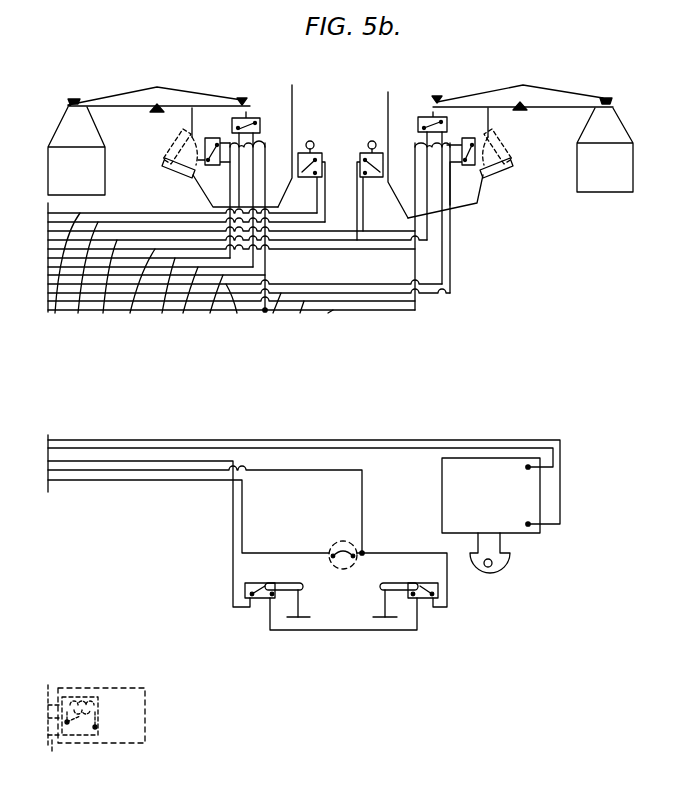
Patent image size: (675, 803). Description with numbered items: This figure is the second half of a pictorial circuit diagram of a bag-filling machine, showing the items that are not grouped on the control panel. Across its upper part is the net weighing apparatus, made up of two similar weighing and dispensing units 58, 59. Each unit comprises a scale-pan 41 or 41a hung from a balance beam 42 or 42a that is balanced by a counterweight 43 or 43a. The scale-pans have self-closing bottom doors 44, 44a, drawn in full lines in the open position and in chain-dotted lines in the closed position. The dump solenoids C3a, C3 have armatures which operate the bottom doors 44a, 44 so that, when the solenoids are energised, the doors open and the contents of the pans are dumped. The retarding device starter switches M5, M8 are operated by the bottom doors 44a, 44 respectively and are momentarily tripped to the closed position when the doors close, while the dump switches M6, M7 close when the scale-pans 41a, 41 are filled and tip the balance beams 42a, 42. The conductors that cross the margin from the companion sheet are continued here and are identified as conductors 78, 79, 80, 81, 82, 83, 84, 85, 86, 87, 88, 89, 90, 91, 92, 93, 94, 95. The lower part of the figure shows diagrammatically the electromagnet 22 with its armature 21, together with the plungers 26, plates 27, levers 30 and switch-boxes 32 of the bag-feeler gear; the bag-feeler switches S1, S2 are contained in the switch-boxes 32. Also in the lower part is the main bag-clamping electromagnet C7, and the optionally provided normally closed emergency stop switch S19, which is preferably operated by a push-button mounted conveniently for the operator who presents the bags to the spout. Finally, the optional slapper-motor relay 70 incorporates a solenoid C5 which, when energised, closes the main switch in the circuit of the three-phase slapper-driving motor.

The weighing and dispensing unit 58 is at (120, 94).
The balance beam 42a is at (190, 97).
The dump switch M6 is at (253, 207).
The retarding device starter switch M5 is at (214, 163).
The self-closing bottom door 44a is at (214, 157).
The counterweight 43a is at (92, 173).
The dump solenoid C3a is at (313, 153).
The dump solenoid C3 is at (370, 152).
The scale-pan 41a is at (278, 182).
The scale-pan 41 is at (408, 193).
The dump switch M7 is at (426, 207).
The retarding device starter switch M8 is at (461, 171).
The self-closing bottom door 44 is at (471, 163).
The balance beam 42 is at (493, 98).
The weighing and dispensing unit 59 is at (547, 87).
The counterweight 43 is at (583, 187).
The conductor 78 is at (182, 272).
The conductor 79 is at (186, 276).
The conductor 80 is at (237, 281).
The conductor 81 is at (231, 290).
The conductor 82 is at (139, 296).
The conductor 83 is at (150, 301).
The conductor 84 is at (156, 305).
The conductor 85 is at (245, 307).
The conductor 86 is at (249, 312).
The conductor 87 is at (231, 316).
The conductor 88 is at (231, 321).
The conductor 89 is at (304, 472).
The conductor 90 is at (108, 437).
The conductor 91 is at (80, 462).
The conductor 92 is at (102, 471).
The conductor 93 is at (135, 481).
The emergency stop switch S19 is at (343, 549).
The electromagnet 22 is at (450, 498).
The main bag-clamping electromagnet C7 is at (491, 495).
The armature 21 is at (506, 559).
The bag-feeler switch S1 is at (260, 581).
The bag-feeler switch S2 is at (423, 582).
The lever 30 is at (341, 578).
The plunger 26 is at (382, 596).
The plate 27 is at (375, 617).
The switch-box 32 is at (426, 600).
The conductor 94 is at (48, 707).
The solenoid C5 is at (88, 697).
The conductor 95 is at (57, 754).
The slapper-motor relay 70 is at (118, 745).